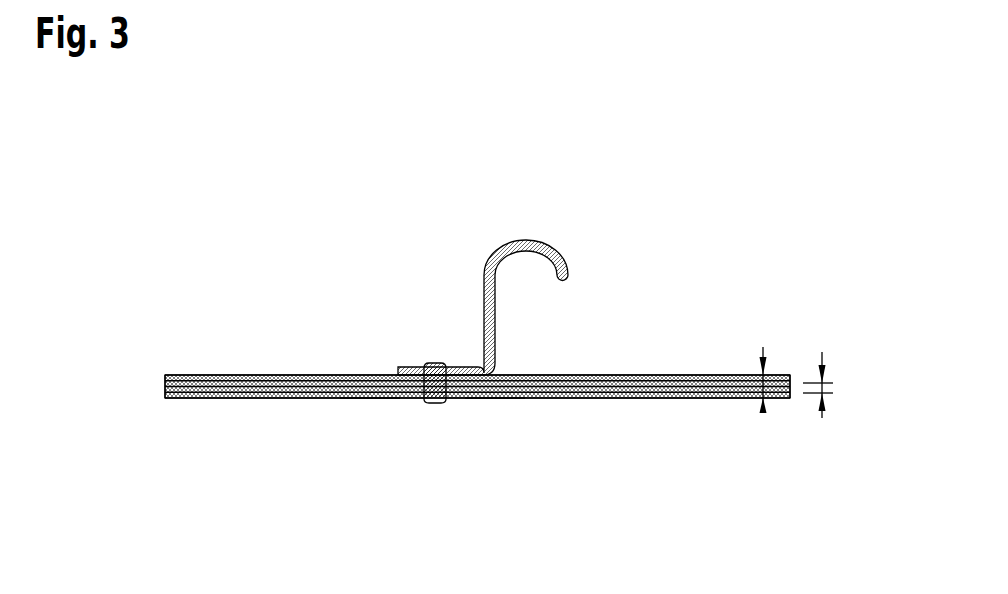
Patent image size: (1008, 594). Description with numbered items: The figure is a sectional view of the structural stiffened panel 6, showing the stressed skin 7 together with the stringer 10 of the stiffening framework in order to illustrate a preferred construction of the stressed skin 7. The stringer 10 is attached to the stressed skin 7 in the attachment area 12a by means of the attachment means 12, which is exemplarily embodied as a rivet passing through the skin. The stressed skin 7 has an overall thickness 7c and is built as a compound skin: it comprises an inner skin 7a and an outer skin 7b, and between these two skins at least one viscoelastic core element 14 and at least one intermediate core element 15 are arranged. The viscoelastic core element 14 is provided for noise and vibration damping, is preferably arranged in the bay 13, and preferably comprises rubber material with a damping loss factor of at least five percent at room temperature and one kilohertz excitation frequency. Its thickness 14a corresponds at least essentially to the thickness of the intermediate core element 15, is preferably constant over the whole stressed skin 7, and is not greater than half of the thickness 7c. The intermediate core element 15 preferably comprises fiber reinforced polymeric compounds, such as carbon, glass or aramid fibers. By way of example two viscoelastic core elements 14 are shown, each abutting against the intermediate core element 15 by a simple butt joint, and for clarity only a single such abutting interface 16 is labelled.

The structural stiffened panel 6 is at (207, 257).
The stressed skin 7 is at (110, 353).
The inner skin 7a is at (190, 360).
The outer skin 7b is at (190, 414).
The thickness 7c is at (757, 352).
The stringer 10 is at (561, 250).
The attachment means 12 is at (432, 364).
The attachment area 12a is at (430, 442).
The bay 13 is at (250, 360).
The viscoelastic core element 14 is at (250, 413).
The thickness 14a is at (823, 357).
The intermediate core element 15 is at (492, 413).
The abutting interface 16 is at (369, 413).